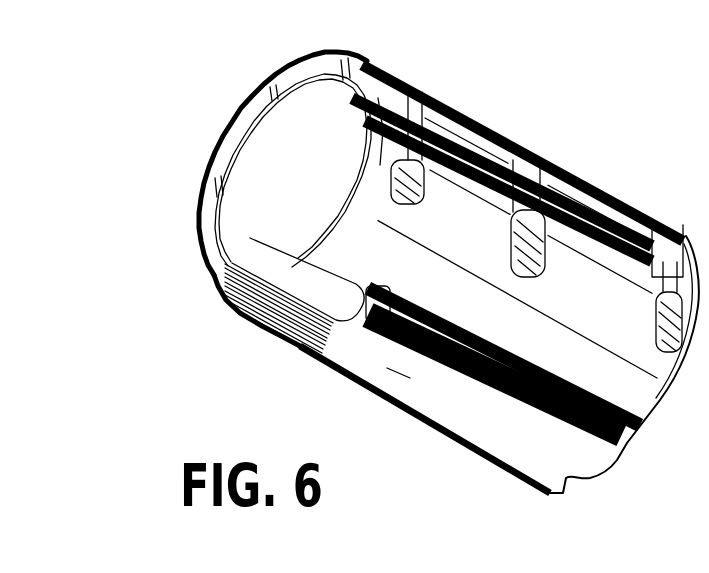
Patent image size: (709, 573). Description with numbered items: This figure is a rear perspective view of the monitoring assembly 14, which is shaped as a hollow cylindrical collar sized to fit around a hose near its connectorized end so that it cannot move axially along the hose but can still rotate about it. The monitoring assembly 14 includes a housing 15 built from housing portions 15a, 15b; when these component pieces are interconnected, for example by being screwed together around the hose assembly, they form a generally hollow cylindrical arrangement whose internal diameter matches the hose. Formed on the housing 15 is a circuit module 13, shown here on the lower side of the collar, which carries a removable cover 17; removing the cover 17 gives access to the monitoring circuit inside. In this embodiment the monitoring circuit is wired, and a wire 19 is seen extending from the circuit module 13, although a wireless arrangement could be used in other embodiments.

The circuit module 13 is at (432, 383).
The monitoring assembly 14 is at (160, 371).
The housing 15 is at (497, 132).
The housing portion 15a is at (213, 150).
The housing portion 15b is at (210, 277).
The removable cover 17 is at (497, 442).
The wire 19 is at (296, 304).